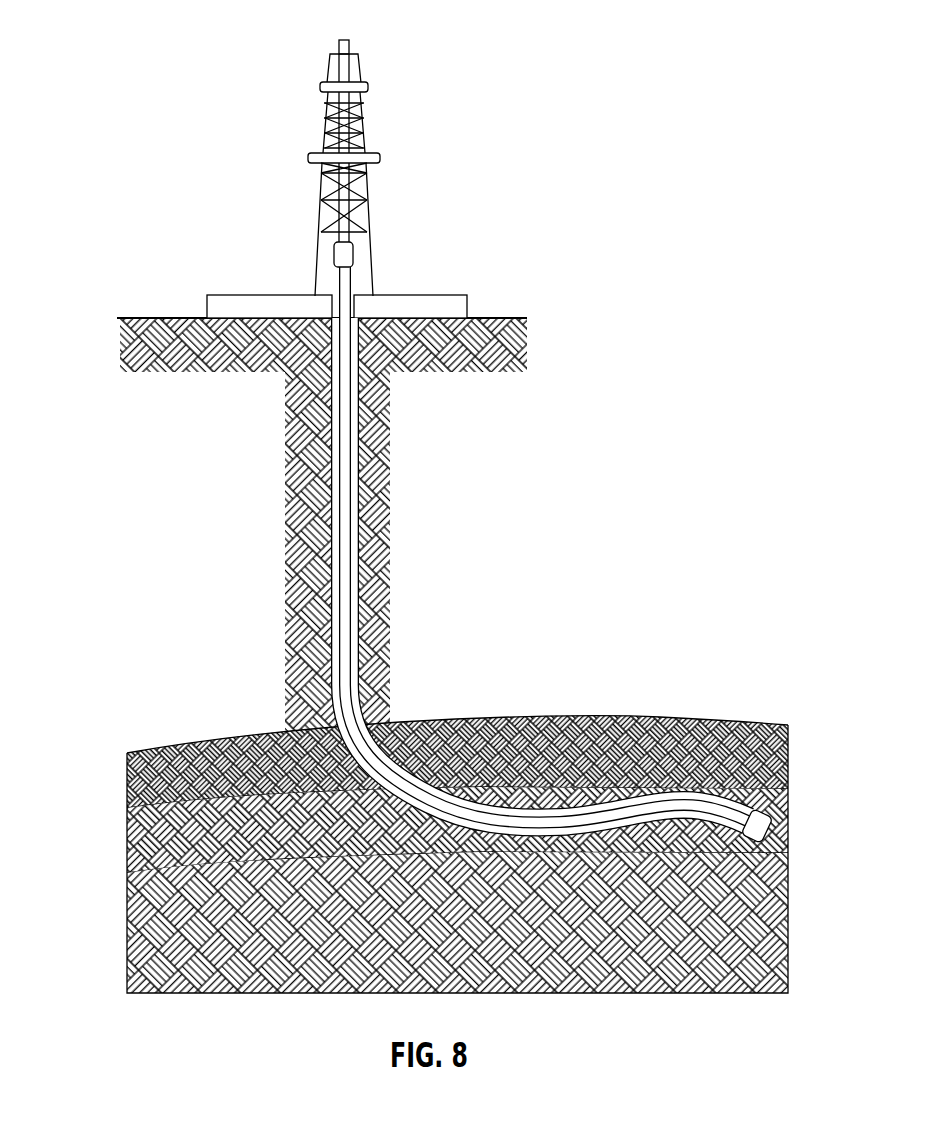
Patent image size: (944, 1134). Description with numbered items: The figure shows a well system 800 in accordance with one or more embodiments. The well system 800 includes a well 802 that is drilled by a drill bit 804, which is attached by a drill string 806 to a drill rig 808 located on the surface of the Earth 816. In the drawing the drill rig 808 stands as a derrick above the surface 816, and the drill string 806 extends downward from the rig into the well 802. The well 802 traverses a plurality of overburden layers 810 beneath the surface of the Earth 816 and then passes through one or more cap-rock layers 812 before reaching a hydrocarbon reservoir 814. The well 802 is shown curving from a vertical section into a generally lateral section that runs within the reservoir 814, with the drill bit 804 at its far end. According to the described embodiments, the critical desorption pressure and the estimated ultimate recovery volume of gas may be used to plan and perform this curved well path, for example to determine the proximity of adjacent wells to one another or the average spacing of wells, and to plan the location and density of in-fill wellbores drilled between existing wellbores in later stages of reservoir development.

The well system 800 is at (132, 44).
The well 802 is at (332, 540).
The drill bit 804 is at (770, 836).
The drill string 806 is at (349, 285).
The drill rig 808 is at (367, 190).
The overburden layers 810 is at (392, 422).
The cap-rock layers 812 is at (128, 773).
The hydrocarbon reservoir 814 is at (128, 845).
The surface of the Earth 816 is at (497, 318).